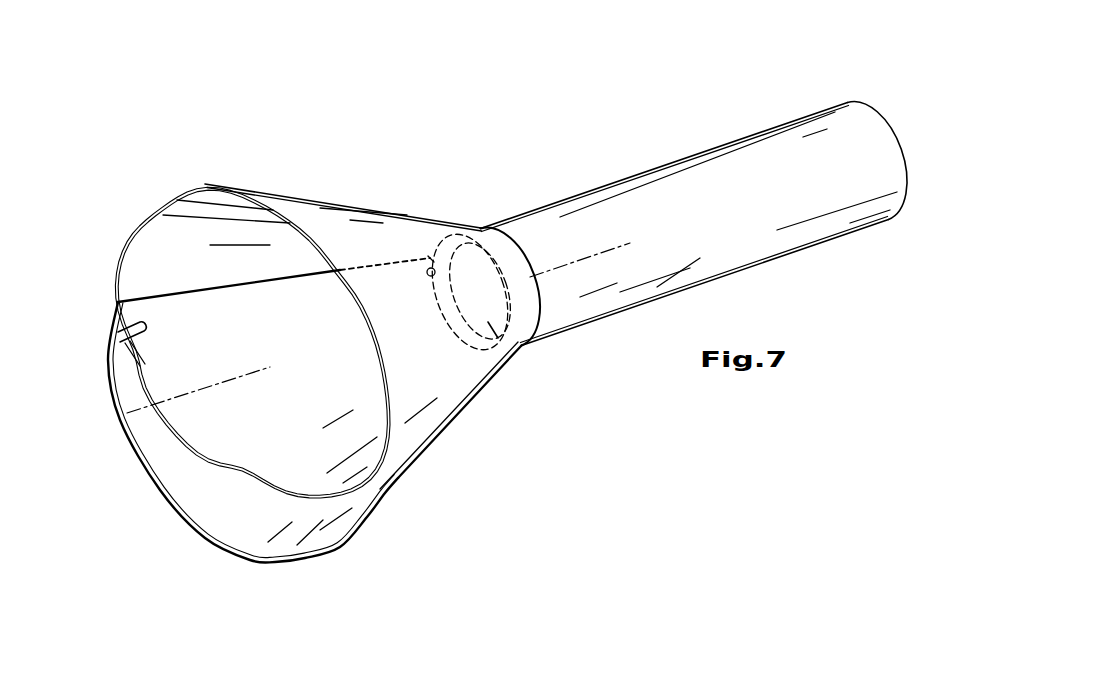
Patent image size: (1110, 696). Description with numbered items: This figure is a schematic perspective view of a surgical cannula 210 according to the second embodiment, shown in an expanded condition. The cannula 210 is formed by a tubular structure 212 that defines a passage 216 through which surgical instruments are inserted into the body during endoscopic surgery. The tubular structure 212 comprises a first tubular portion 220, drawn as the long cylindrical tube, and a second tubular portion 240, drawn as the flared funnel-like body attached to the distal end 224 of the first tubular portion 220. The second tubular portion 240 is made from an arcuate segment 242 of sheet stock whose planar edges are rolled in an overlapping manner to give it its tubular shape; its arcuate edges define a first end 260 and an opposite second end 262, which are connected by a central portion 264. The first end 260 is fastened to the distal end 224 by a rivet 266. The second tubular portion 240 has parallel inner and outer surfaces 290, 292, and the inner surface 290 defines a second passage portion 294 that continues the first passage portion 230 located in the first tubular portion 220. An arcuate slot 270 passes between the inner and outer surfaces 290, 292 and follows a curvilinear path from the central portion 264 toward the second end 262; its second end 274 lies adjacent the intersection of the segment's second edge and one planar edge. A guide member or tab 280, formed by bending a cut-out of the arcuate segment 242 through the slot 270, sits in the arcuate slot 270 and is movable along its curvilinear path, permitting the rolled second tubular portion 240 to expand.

The cannula 210 is at (725, 104).
The tubular structure 212 is at (577, 326).
The passage 216 is at (482, 272).
The first tubular portion 220 is at (776, 257).
The distal end 224 is at (460, 240).
The first passage portion 230 is at (490, 330).
The second tubular portion 240 is at (452, 422).
The arcuate segment 242 is at (318, 537).
The first end 260 is at (518, 252).
The second end 262 is at (207, 502).
The central portion 264 is at (340, 235).
The rivet 266 is at (430, 267).
The arcuate slot 270 is at (193, 447).
The second end of the arcuate slot 274 is at (115, 280).
The tab 280 is at (133, 340).
The inner surface 290 is at (250, 533).
The outer surface 292 is at (402, 453).
The second passage portion 294 is at (210, 245).